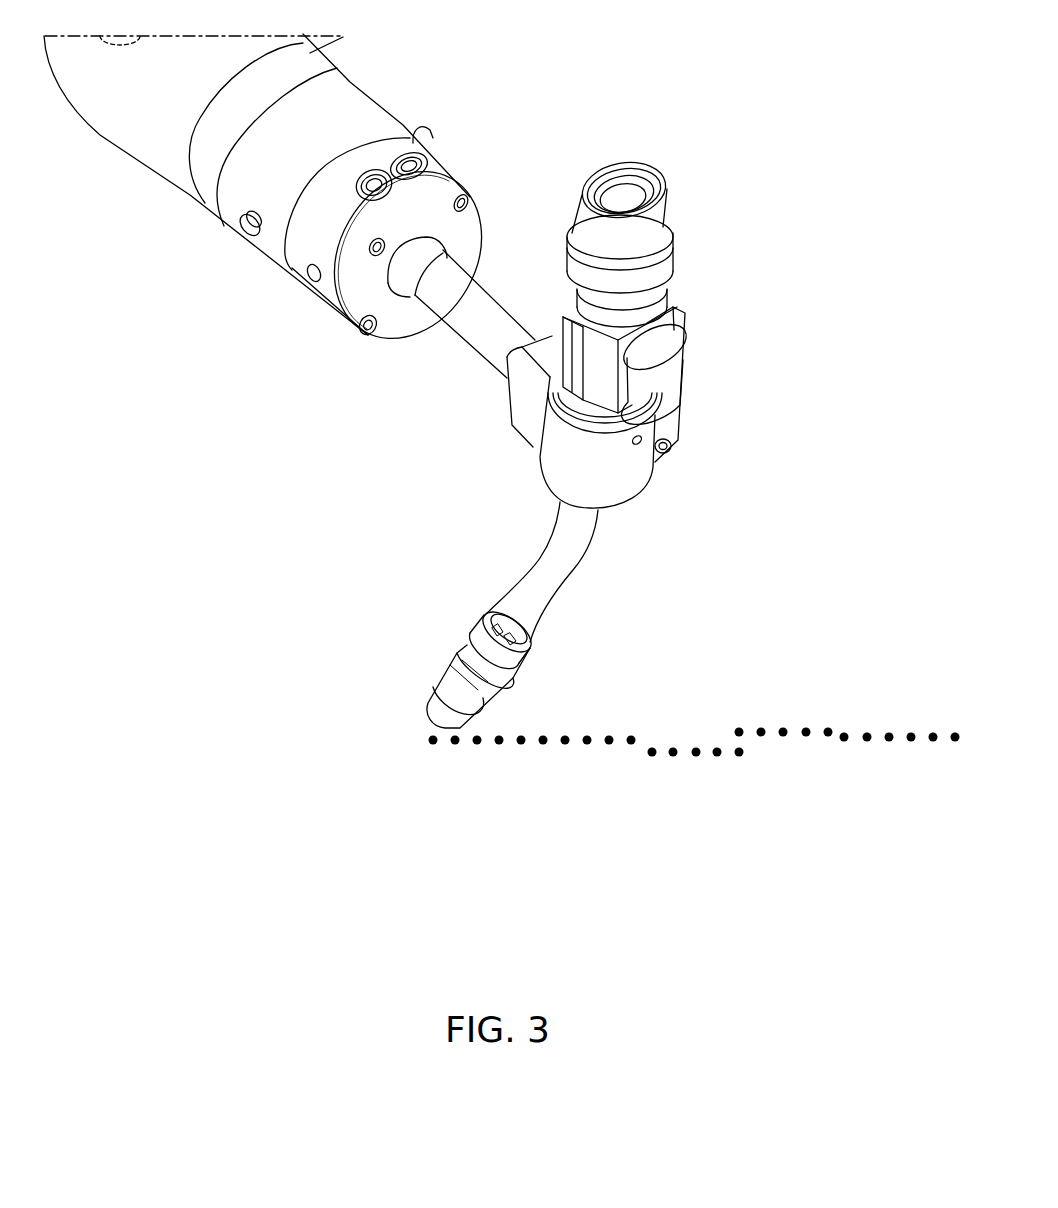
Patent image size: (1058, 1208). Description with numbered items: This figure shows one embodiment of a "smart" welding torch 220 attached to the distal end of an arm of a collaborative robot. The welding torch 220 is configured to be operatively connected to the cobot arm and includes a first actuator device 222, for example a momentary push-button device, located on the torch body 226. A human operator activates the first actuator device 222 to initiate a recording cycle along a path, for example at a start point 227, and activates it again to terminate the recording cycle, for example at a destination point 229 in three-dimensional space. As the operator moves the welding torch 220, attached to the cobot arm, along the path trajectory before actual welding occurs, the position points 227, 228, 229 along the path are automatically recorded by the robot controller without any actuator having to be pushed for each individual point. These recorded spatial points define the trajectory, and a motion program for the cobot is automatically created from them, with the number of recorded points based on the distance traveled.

The welding torch 220 is at (470, 58).
The first actuator device 222 is at (415, 158).
The torch body 226 is at (500, 207).
The start point 227 is at (432, 748).
The position points 228 is at (933, 772).
The destination point 229 is at (955, 729).